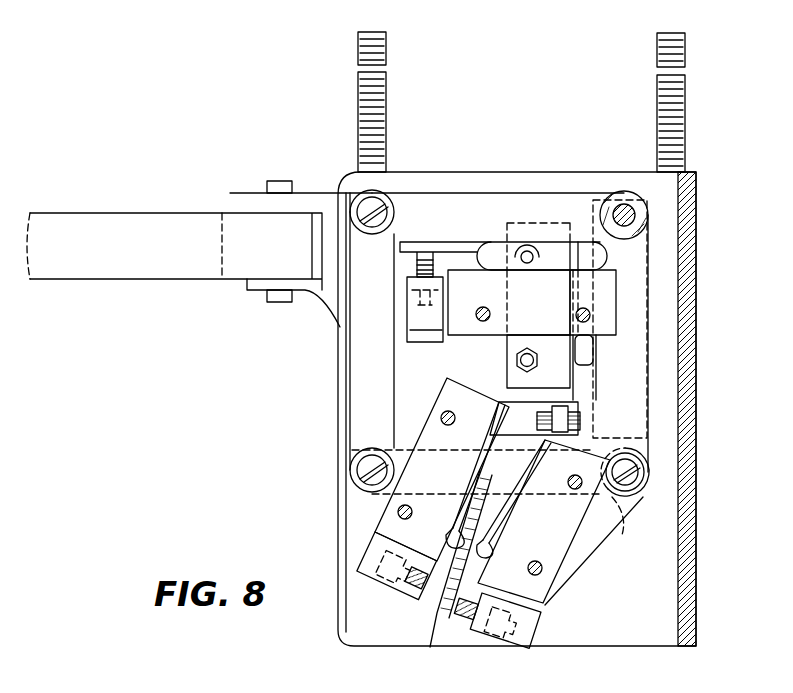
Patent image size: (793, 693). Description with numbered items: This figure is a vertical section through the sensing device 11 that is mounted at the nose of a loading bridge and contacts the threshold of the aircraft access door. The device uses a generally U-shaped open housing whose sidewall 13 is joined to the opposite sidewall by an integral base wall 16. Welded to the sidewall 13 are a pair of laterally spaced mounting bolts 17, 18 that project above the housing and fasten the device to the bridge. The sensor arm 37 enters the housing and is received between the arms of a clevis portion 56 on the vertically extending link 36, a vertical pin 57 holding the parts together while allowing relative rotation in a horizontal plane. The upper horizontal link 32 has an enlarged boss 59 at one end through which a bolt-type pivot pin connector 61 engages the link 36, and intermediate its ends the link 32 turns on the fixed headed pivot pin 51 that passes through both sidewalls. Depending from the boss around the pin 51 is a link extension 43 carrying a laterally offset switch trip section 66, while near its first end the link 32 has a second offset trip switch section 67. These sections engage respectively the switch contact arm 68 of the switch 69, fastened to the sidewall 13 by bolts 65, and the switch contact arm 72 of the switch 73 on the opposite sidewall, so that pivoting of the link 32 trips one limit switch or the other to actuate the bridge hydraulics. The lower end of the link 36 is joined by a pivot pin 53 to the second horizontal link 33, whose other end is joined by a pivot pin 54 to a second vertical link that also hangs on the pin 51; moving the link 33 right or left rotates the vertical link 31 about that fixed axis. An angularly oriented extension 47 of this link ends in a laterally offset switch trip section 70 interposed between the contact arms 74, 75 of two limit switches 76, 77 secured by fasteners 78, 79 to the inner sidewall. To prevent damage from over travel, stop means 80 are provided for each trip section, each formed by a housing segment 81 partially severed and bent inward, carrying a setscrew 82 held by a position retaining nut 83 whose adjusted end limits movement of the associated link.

The sensing device 11 is at (705, 128).
The sidewall 13 is at (643, 648).
The base wall 16 is at (698, 400).
The mounting bolt 17 is at (388, 102).
The mounting bolt 18 is at (687, 52).
The vertical link 31 is at (652, 492).
The upper horizontal link 32 is at (487, 197).
The second horizontal link 33 is at (595, 551).
The vertically extending link 36 is at (352, 420).
The sensor arm 37 is at (138, 213).
The link extension 43 is at (647, 438).
The angularly oriented extension 47 is at (593, 537).
The headed pivot pin 51 is at (640, 222).
The pivot pin 53 is at (362, 478).
The pivot pin 54 is at (640, 297).
The clevis portion 56 is at (248, 198).
The pin 57 is at (280, 181).
The enlarged boss 59 is at (358, 198).
The bolt-type pivot pin connector 61 is at (380, 205).
The bolts 65 is at (545, 250).
The switch trip section 66 is at (598, 373).
The second offset trip switch section 67 is at (450, 240).
The switch contact arm 68 is at (590, 362).
The switch 69 is at (507, 355).
The laterally offset switch trip section 70 is at (440, 613).
The switch contact arm 72 is at (492, 255).
The switch 73 is at (462, 336).
The contact arm 74 is at (492, 541).
The contact arm 75 is at (462, 502).
The limit switch 76 is at (384, 520).
The limit switch 77 is at (557, 562).
The fastener 78 is at (446, 412).
The fastener 79 is at (569, 481).
The stop means 80 is at (409, 306).
The housing segment 81 is at (407, 279).
The setscrew 82 is at (425, 258).
The position retaining nut 83 is at (415, 320).